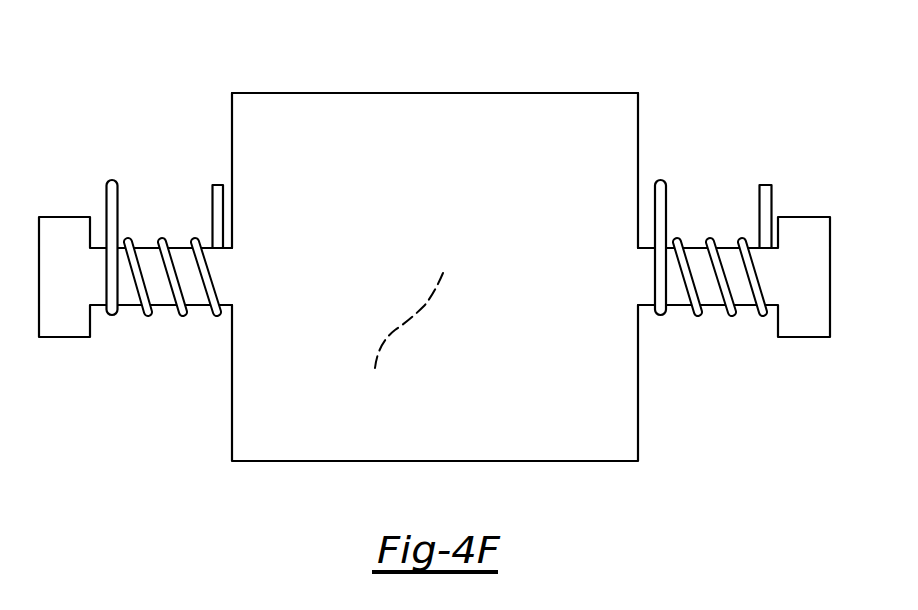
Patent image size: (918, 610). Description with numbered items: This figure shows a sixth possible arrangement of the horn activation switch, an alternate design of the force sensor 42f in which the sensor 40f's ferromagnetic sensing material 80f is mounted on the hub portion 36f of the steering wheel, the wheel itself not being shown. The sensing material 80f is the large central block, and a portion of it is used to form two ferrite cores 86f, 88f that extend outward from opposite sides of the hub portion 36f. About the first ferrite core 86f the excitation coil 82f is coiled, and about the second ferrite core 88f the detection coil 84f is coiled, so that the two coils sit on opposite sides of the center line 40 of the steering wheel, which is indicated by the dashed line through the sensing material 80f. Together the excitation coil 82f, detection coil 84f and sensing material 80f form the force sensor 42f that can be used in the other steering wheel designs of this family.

The hub portion 36f is at (562, 93).
The force sensor 42f is at (333, 93).
The ferromagnetic sensing material 80f is at (448, 93).
The excitation coil 82f is at (106, 194).
The detection coil 84f is at (772, 200).
The ferrite core 86f is at (130, 298).
The ferrite core 88f is at (680, 297).
The center line 40 is at (404, 335).